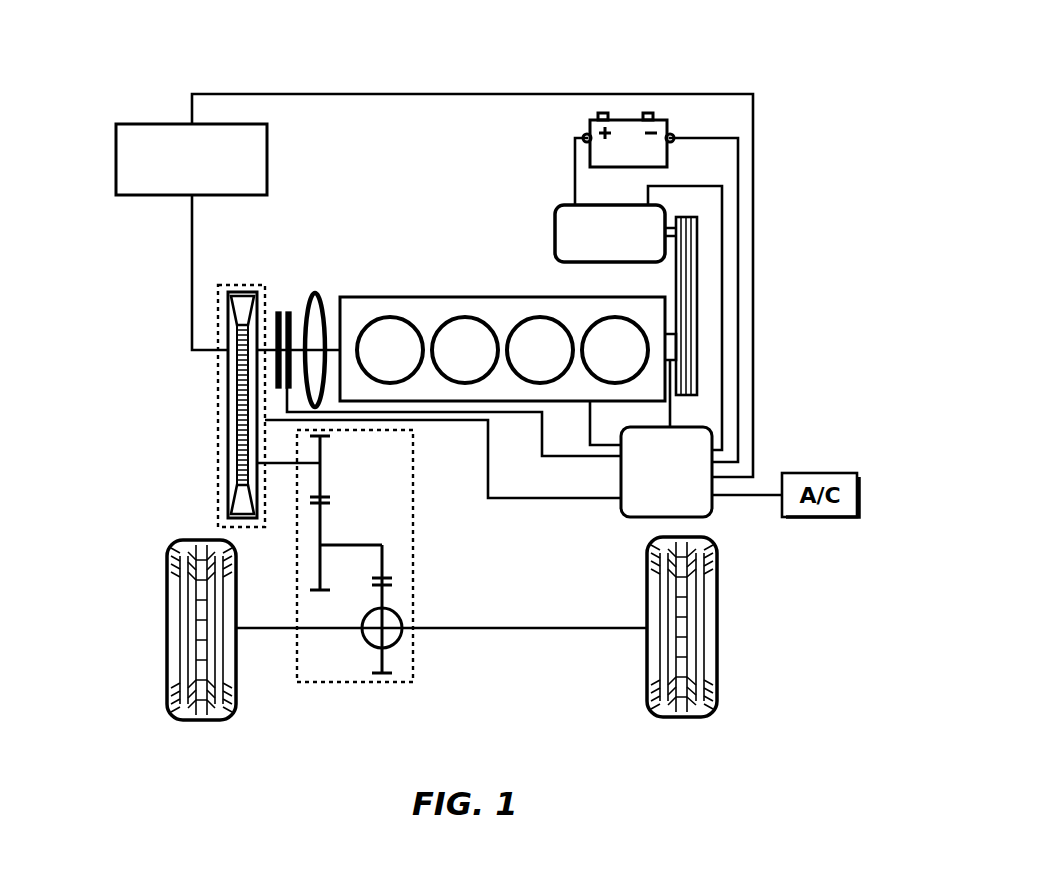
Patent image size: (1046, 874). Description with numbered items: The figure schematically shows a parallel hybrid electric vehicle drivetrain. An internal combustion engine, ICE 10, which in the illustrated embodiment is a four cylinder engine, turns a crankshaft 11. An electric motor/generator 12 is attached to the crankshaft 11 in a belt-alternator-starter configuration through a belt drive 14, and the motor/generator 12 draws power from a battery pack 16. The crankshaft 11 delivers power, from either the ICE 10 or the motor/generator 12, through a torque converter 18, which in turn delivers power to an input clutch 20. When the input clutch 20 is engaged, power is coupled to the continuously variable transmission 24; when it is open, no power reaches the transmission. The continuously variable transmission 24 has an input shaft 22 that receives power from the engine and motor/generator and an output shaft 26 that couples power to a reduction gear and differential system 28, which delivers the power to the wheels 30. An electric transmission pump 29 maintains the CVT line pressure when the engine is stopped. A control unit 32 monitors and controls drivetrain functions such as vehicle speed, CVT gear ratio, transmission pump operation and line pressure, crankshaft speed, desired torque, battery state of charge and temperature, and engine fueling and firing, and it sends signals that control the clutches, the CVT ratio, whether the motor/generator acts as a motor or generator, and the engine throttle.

The ICE 10 is at (460, 297).
The crankshaft 11 is at (330, 305).
The electric motor/generator 12 is at (555, 222).
The belt drive 14 is at (697, 325).
The battery pack 16 is at (628, 118).
The torque converter 18 is at (315, 300).
The input clutch 20 is at (286, 310).
The input shaft 22 is at (268, 285).
The continuously variable transmission 24 is at (218, 435).
The output shaft 26 is at (290, 465).
The reduction gear and differential system 28 is at (413, 535).
The electric transmission pump 29 is at (116, 150).
The wheels 30 is at (167, 583).
The control unit 32 is at (715, 505).